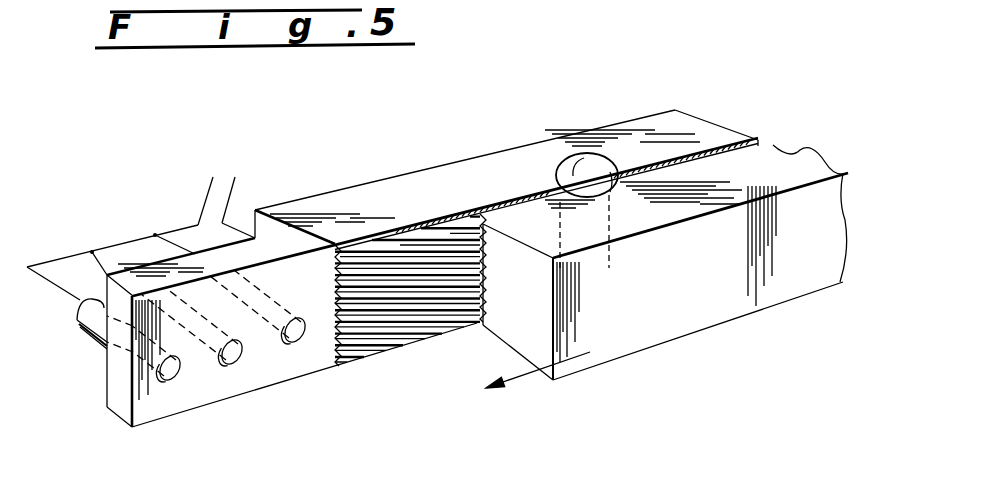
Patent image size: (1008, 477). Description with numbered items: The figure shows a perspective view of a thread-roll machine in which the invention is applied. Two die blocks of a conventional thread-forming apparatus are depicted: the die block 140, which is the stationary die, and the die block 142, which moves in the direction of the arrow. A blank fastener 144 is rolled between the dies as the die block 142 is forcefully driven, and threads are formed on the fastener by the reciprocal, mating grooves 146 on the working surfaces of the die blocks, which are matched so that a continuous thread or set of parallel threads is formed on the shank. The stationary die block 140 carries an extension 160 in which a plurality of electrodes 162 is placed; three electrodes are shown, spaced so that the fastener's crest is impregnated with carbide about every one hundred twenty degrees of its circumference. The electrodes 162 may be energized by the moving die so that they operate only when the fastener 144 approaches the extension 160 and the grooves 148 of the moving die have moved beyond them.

The die block 140 is at (608, 133).
The die block 142 is at (720, 300).
The blank fastener 144 is at (556, 184).
The grooves 146 is at (403, 332).
The grooves 148 is at (473, 327).
The extension 160 is at (112, 395).
The electrodes 162 is at (290, 342).